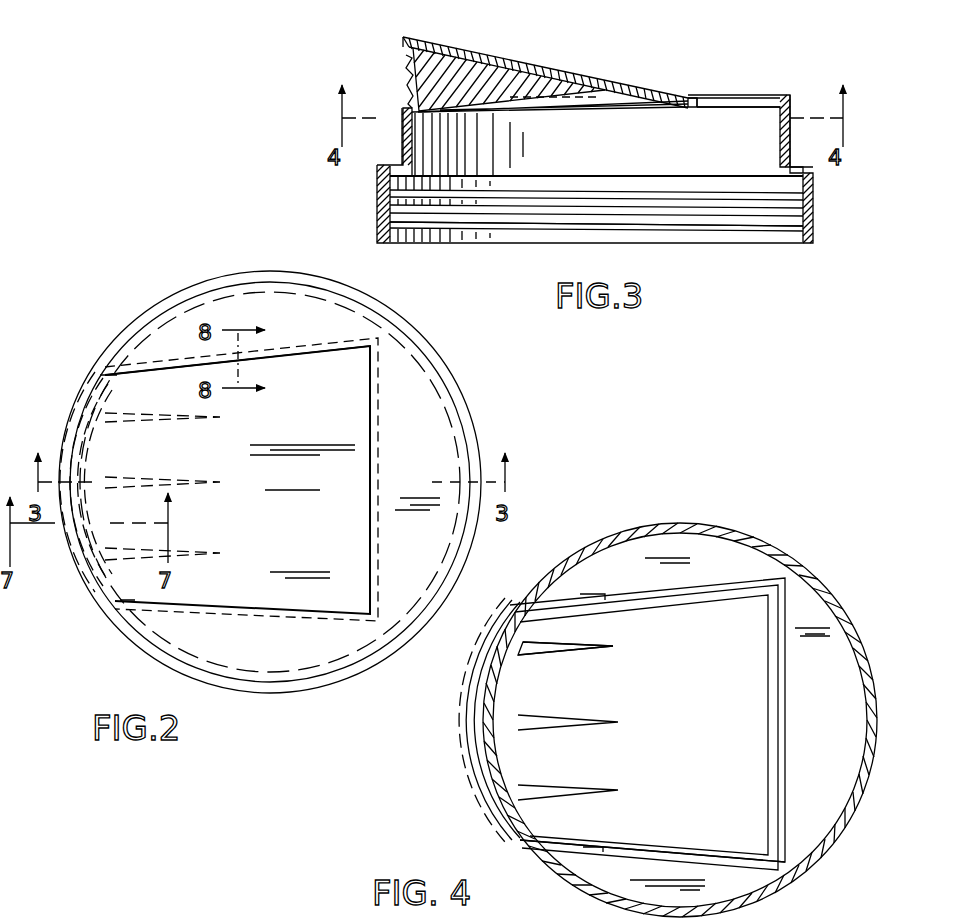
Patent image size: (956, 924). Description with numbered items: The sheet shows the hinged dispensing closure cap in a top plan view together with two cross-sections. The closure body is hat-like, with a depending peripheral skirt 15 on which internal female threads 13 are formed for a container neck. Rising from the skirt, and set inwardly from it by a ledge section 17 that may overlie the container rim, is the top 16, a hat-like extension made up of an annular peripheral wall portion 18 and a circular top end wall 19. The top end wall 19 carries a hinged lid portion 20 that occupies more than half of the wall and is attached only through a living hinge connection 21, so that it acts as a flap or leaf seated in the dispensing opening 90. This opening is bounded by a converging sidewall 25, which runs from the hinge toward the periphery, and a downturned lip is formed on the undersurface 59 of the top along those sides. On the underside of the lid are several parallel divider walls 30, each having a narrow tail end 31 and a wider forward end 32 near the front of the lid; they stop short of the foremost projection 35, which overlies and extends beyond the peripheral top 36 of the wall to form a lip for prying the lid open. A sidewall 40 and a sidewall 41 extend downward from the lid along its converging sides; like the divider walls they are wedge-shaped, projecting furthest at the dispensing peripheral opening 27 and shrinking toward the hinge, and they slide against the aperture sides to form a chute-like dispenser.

In FIG. 3, the internal female threads 13 is at (757, 233).
In FIG. 3, the depending peripheral skirt 15 is at (377, 207).
In FIG. 3, the top 16 is at (737, 83).
In FIG. 3, the ledge section 17 is at (397, 166).
In FIG. 3, the annular peripheral wall portion 18 is at (792, 153).
In FIG. 3, the top end wall 19 is at (702, 93).
In FIG. 2, the top end wall 19 is at (432, 455).
In FIG. 2, the hinged lid portion 20 is at (322, 513).
In FIG. 2, the living hinge connection 21 is at (372, 398).
In FIG. 2, the converging sidewall 25 is at (312, 352).
In FIG. 2, the dispensing peripheral opening 27 is at (100, 582).
In FIG. 3, the divider walls 30 is at (606, 100).
In FIG. 4, the divider walls 30 is at (590, 645).
In FIG. 4, the narrow tail end 31 is at (615, 650).
In FIG. 4, the wider forward end 32 is at (523, 660).
In FIG. 3, the foremost projection 35 is at (403, 37).
In FIG. 3, the peripheral top 36 is at (410, 107).
In FIG. 4, the sidewall 40 is at (716, 598).
In FIG. 4, the sidewall 41 is at (675, 845).
In FIG. 3, the undersurface 59 is at (730, 108).
In FIG. 3, the dispensing opening 90 is at (392, 59).